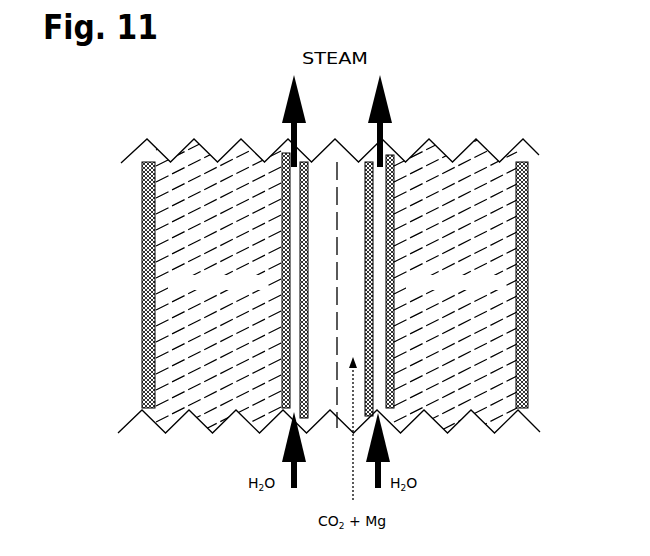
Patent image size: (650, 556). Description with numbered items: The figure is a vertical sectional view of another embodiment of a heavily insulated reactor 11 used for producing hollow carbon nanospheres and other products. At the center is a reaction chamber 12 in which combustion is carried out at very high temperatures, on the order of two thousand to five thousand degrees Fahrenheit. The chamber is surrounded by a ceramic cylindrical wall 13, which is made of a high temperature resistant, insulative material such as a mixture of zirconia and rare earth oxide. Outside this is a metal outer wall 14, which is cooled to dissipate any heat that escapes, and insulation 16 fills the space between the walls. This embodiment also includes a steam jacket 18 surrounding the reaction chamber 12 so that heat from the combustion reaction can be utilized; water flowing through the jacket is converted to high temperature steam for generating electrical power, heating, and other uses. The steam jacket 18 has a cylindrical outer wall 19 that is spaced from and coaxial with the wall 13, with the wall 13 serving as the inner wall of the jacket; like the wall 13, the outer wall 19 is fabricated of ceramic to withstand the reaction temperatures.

The reactor 11 is at (100, 155).
The reaction chamber 12 is at (353, 243).
The ceramic cylindrical wall 13 is at (364, 174).
The outer wall 14 is at (147, 250).
The insulation 16 is at (180, 343).
The steam jacket 18 is at (381, 181).
The cylindrical outer wall 19 is at (282, 178).